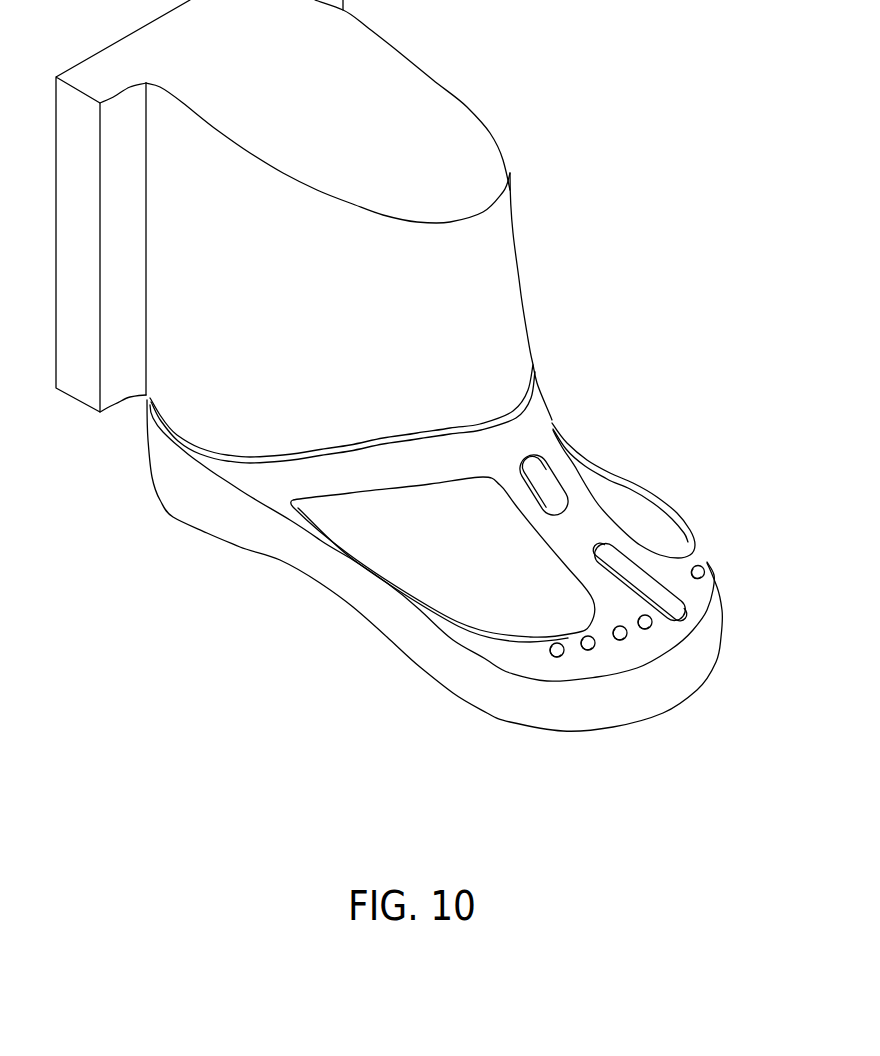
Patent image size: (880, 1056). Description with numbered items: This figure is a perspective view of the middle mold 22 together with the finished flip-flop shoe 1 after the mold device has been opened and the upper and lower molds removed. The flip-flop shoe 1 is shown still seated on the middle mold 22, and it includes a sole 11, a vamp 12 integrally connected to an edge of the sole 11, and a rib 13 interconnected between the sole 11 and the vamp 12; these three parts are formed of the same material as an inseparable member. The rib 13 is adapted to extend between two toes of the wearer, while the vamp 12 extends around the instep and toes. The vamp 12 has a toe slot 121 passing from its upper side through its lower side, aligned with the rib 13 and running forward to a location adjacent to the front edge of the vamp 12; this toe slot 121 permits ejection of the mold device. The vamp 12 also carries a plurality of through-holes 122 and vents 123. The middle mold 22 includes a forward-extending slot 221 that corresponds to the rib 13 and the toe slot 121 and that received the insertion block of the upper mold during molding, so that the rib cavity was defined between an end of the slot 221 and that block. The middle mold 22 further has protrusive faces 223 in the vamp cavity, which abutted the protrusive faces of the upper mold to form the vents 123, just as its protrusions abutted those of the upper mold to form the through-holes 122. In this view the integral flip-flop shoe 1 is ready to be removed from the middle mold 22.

The flip-flop shoe 1 is at (208, 542).
The sole 11 is at (488, 720).
The vamp 12 is at (532, 422).
The rib 13 is at (607, 545).
The toe slot 121 is at (650, 568).
The through-holes 122 is at (704, 565).
The vents 123 is at (340, 557).
The middle mold 22 is at (493, 278).
The slot 221 is at (690, 624).
The protrusive faces 223 is at (437, 580).